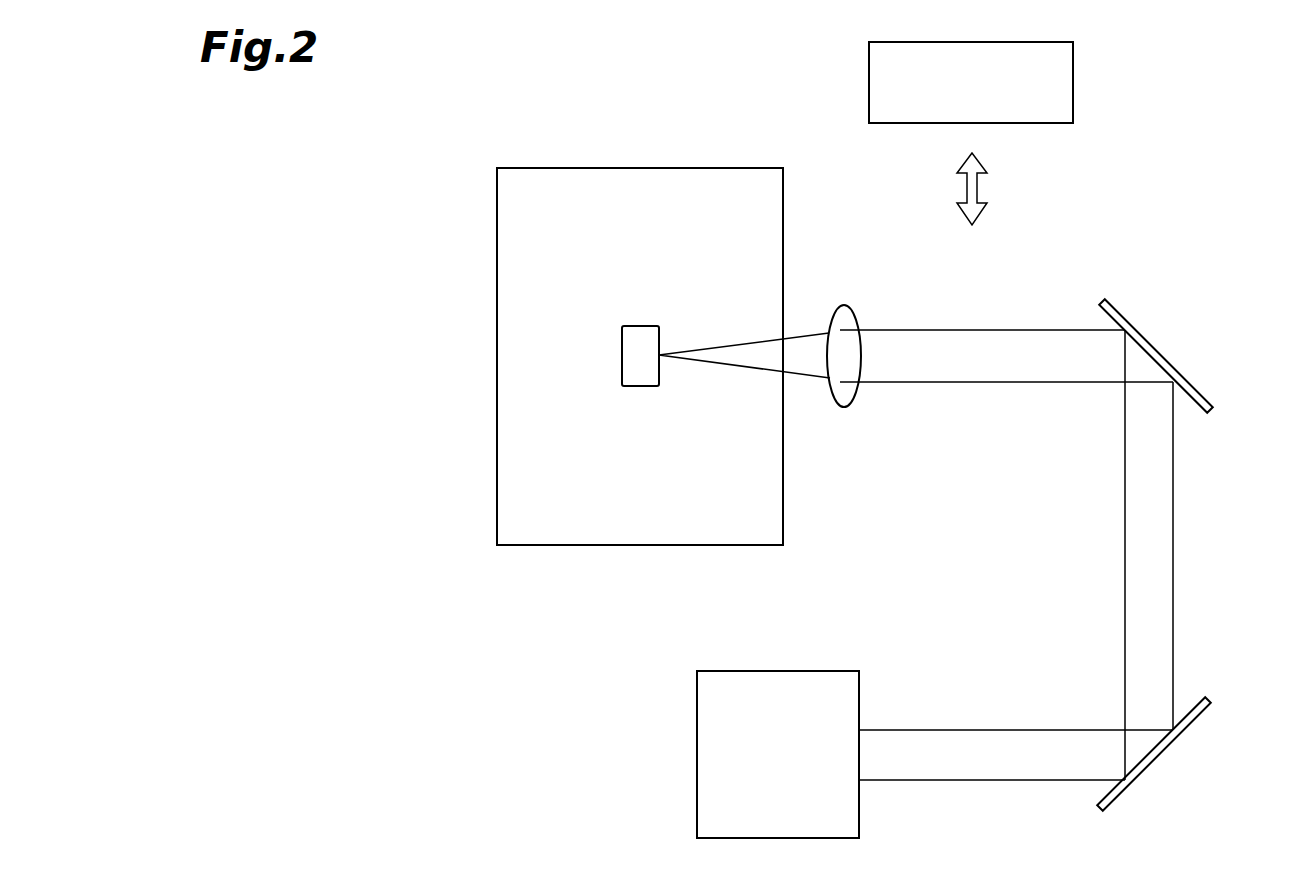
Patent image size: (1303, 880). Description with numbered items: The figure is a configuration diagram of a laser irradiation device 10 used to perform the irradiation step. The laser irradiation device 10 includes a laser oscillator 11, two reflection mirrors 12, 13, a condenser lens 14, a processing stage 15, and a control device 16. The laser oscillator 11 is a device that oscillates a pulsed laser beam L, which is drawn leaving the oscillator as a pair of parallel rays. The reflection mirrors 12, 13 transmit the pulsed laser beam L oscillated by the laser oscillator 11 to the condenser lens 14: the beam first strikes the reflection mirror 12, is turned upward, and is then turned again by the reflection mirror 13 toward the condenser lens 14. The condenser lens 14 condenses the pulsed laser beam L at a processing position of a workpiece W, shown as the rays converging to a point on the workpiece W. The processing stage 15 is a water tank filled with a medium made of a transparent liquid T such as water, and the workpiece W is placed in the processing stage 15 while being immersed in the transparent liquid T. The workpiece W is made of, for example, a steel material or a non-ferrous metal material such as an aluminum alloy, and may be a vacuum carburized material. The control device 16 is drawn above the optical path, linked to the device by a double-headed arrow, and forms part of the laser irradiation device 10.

The laser irradiation device 10 is at (1206, 169).
The laser oscillator 11 is at (780, 671).
The reflection mirror 12 is at (1158, 758).
The reflection mirror 13 is at (1160, 352).
The condenser lens 14 is at (845, 305).
The processing stage 15 is at (643, 168).
The control device 16 is at (1073, 75).
The transparent liquid T is at (731, 237).
The workpiece W is at (643, 386).
The pulsed laser beam L is at (972, 780).